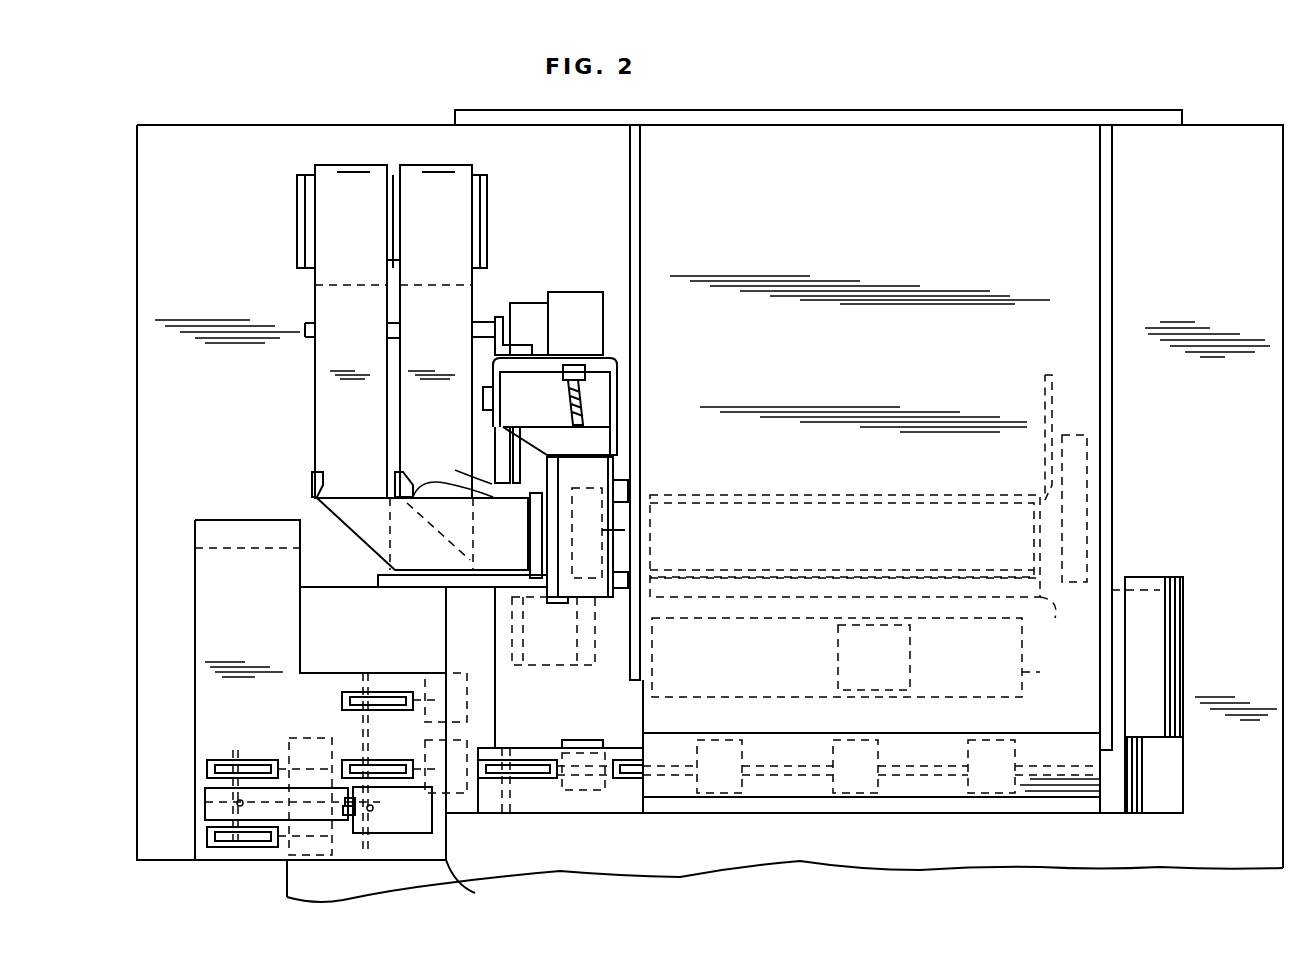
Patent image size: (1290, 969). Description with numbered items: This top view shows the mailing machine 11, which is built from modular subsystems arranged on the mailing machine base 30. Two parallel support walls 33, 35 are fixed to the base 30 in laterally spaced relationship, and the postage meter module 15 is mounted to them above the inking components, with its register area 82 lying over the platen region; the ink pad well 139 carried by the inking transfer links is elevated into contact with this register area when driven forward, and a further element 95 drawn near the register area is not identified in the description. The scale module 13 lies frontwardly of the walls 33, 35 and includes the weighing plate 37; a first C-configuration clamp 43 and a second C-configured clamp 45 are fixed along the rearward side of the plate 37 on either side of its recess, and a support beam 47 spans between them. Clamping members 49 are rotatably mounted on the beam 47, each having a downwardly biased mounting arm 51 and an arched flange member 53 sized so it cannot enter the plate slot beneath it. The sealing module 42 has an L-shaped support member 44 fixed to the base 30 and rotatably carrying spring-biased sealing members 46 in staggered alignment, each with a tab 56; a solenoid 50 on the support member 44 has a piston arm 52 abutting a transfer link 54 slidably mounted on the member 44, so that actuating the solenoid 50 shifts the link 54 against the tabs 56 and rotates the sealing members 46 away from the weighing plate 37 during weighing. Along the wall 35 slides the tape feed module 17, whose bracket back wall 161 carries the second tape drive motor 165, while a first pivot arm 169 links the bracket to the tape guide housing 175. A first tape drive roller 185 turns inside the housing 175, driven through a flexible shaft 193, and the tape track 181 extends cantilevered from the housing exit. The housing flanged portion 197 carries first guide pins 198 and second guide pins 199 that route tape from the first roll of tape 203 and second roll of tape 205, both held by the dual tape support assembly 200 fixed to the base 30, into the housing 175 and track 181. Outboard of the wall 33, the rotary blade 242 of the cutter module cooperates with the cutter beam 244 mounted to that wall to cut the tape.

The mailing machine 11 is at (370, 112).
The scale module 13 is at (1120, 878).
The postage meter module 15 is at (802, 827).
The tape feed module 17 is at (268, 395).
The mailing machine base 30 is at (137, 243).
The support wall 33 is at (1097, 200).
The support wall 35 is at (641, 220).
The weighing plate 37 is at (287, 878).
The sealing module 42 is at (173, 592).
The first C-configuration clamp 43 is at (1183, 649).
The L-shaped support member 44 is at (235, 520).
The second C-configured clamp 45 is at (447, 632).
The sealing members 46 is at (275, 710).
The support beam 47 is at (617, 813).
The clamping members 49 is at (630, 750).
The solenoid 50 is at (432, 820).
The mounting arm 51 is at (938, 773).
The solenoid piston arm 52 is at (348, 808).
The arched flange member 53 is at (972, 792).
The transfer link 54 is at (350, 810).
The tab 56 is at (390, 808).
The register area 82 is at (822, 666).
The motor mount 95 is at (1040, 672).
The ink pad well 139 is at (1055, 618).
The back wall 161 is at (577, 357).
The second tape drive motor 165 is at (583, 292).
The first pivot arm 169 is at (617, 437).
The tape guide housing 175 is at (598, 583).
The tape track 181 is at (928, 490).
The first tape drive roller 185 is at (679, 528).
The flexible shaft 193 is at (618, 402).
The flanged portion 197 is at (440, 585).
The first guide pins 198 is at (493, 468).
The second guide pins 199 is at (415, 498).
The dual tape support assembly 200 is at (488, 213).
The first roll of tape 203 is at (450, 165).
The second roll of tape 205 is at (337, 163).
The rotary blade 242 is at (1062, 423).
The cutter beam 244 is at (1090, 488).